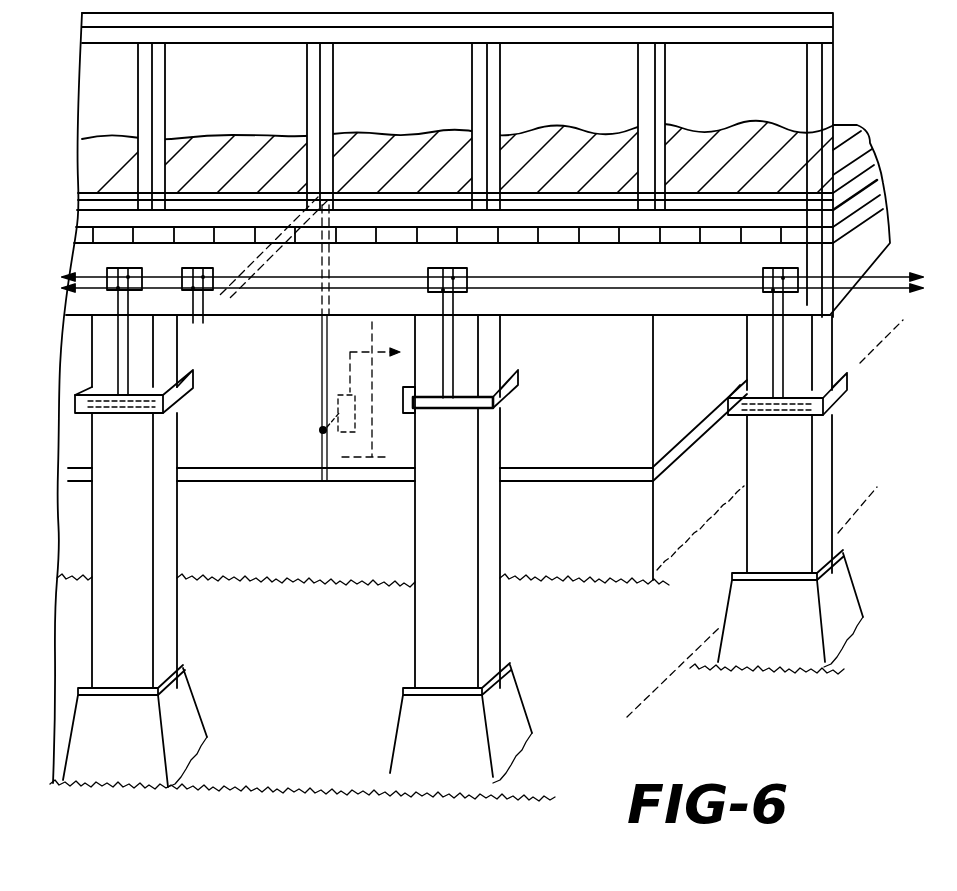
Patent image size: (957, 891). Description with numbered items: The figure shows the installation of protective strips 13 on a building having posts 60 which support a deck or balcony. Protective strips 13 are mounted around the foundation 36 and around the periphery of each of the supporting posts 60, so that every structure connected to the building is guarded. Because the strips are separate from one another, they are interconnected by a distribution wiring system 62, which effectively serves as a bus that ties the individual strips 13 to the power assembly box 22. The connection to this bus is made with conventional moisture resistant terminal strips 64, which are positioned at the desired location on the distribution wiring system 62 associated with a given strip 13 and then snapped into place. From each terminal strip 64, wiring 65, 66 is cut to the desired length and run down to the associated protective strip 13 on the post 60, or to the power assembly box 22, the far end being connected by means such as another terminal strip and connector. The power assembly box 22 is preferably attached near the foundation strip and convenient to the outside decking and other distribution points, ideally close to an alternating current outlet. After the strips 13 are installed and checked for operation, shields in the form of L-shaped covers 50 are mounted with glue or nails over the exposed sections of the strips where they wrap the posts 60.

The protective strip 13 is at (343, 483).
The power assembly box 22 is at (342, 397).
The foundation 36 is at (592, 547).
The cover 50 is at (186, 385).
The post 60 is at (170, 642).
The distribution wiring system 62 is at (335, 263).
The terminal strip 64 is at (195, 268).
The wiring 65 is at (130, 353).
The wiring 66 is at (120, 349).